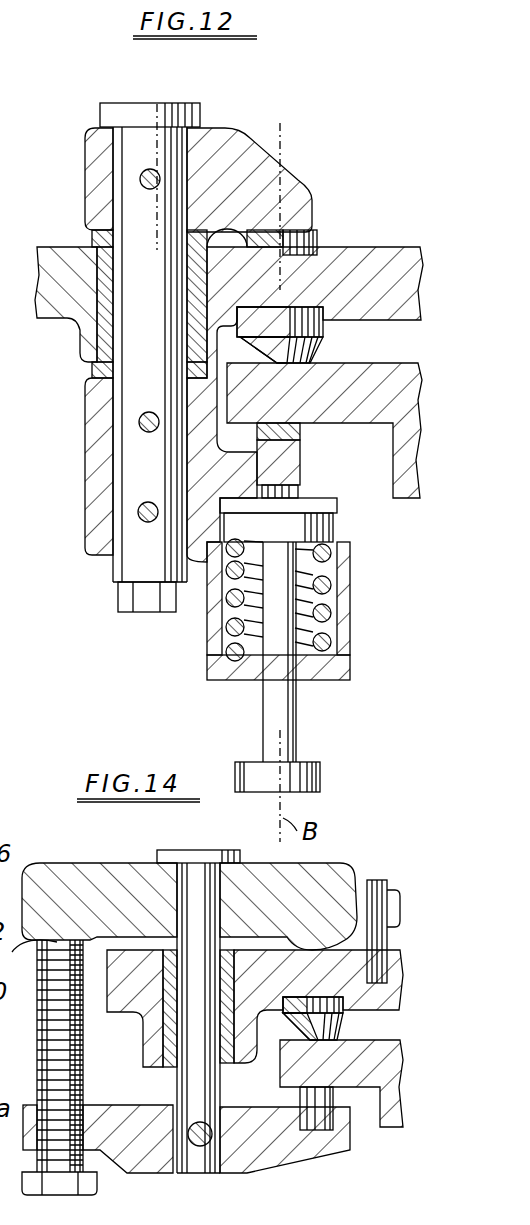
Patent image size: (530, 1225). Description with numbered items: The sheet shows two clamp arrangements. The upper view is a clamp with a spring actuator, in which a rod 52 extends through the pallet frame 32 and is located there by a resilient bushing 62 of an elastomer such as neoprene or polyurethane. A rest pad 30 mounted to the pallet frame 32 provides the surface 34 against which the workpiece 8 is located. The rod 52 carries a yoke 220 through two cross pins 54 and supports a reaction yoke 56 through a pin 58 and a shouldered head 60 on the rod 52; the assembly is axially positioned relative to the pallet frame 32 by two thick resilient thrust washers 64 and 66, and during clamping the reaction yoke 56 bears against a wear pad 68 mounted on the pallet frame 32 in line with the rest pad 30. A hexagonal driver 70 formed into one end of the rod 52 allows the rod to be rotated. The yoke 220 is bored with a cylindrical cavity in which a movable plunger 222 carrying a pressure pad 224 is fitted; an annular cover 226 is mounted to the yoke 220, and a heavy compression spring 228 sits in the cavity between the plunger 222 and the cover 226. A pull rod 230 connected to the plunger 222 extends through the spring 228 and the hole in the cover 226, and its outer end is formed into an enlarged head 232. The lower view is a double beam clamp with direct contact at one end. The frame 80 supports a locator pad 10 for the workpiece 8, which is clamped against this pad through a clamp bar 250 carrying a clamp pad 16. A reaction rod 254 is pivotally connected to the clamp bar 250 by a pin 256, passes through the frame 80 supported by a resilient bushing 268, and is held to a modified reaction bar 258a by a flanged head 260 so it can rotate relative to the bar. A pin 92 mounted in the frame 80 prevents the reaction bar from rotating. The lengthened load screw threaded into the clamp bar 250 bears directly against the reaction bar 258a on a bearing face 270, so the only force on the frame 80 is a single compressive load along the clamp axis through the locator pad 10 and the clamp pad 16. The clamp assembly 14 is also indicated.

In FIG. 12, the workpiece 8 is at (410, 463).
In FIG. 14, the workpiece 8 is at (385, 1058).
In FIG. 14, the locator pad 10 is at (292, 1030).
In FIG. 12, the clamp assembly 14 is at (56, 466).
In FIG. 14, the clamp pad 16 is at (336, 1095).
In FIG. 12, the rest pad 30 is at (322, 333).
In FIG. 12, the pallet frame 32 is at (393, 250).
In FIG. 12, the surface 34 is at (307, 360).
In FIG. 12, the rod 52 is at (132, 565).
In FIG. 12, the cross pins 54 is at (138, 423).
In FIG. 12, the reaction yoke 56 is at (85, 142).
In FIG. 12, the pin 58 is at (140, 180).
In FIG. 12, the shouldered head 60 is at (203, 112).
In FIG. 12, the resilient bushing 62 is at (100, 342).
In FIG. 12, the resilient thrust washer 64 is at (92, 372).
In FIG. 12, the resilient thrust washer 66 is at (90, 233).
In FIG. 12, the wear pad 68 is at (318, 236).
In FIG. 12, the hexagonal driver 70 is at (150, 605).
In FIG. 14, the frame 80 is at (398, 1002).
In FIG. 14, the pin 92 is at (383, 943).
In FIG. 12, the yoke 220 is at (352, 580).
In FIG. 12, the movable plunger 222 is at (325, 526).
In FIG. 12, the pressure pad 224 is at (300, 432).
In FIG. 12, the annular cover 226 is at (352, 670).
In FIG. 12, the compression spring 228 is at (327, 617).
In FIG. 12, the pull rod 230 is at (290, 722).
In FIG. 12, the enlarged head 232 is at (320, 777).
In FIG. 14, the clamp bar 250 is at (300, 1165).
In FIG. 14, the reaction rod 254 is at (177, 1088).
In FIG. 14, the pin 256 is at (200, 1146).
In FIG. 14, the modified reaction bar 258a is at (302, 865).
In FIG. 14, the flanged head 260 is at (224, 850).
In FIG. 14, the resilient bushing 268 is at (150, 1066).
In FIG. 14, the bearing face 270 is at (48, 1067).